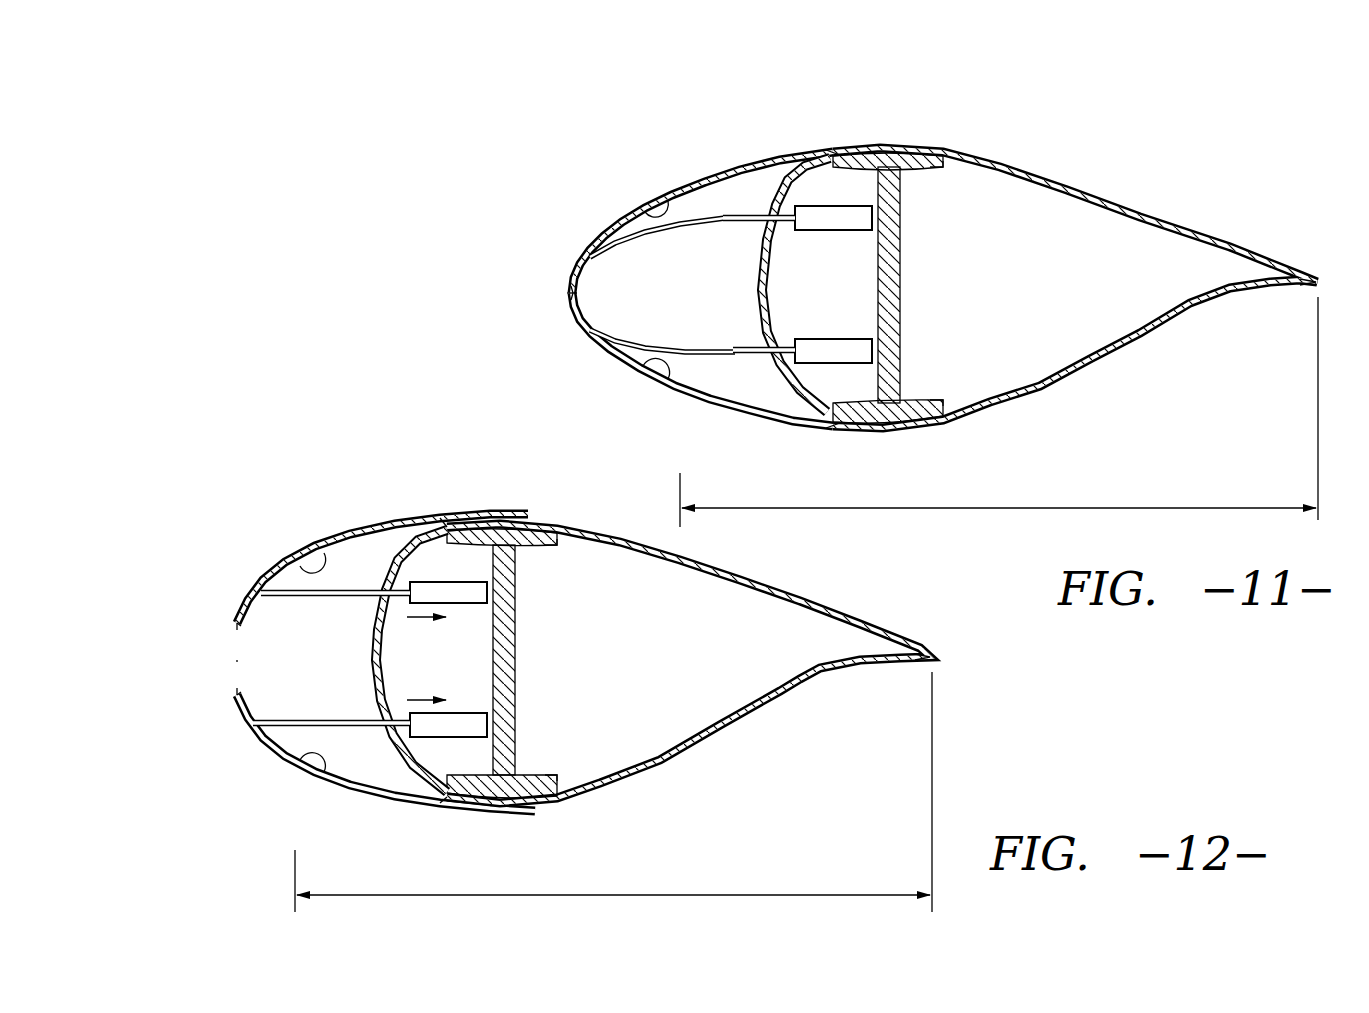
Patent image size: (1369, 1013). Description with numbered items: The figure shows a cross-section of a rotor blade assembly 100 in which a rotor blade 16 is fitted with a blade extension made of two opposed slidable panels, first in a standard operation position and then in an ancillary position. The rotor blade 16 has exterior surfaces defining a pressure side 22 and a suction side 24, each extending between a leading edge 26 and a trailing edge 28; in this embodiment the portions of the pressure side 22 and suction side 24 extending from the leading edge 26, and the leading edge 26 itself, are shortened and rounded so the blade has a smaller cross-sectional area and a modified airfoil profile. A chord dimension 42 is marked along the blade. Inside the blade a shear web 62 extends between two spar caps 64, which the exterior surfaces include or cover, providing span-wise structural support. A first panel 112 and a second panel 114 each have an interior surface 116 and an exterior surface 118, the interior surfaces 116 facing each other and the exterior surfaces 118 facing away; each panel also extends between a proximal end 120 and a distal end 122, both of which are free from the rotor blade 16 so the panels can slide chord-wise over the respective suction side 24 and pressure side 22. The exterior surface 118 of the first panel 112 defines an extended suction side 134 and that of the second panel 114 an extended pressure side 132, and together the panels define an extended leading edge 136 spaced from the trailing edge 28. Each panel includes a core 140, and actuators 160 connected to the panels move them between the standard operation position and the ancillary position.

In FIG. 11, the rotor blade 16 is at (1068, 164).
In FIG. 12, the rotor blade 16 is at (808, 592).
In FIG. 11, the pressure side 22 is at (906, 424).
In FIG. 12, the pressure side 22 is at (520, 800).
In FIG. 11, the suction side 24 is at (900, 152).
In FIG. 12, the suction side 24 is at (505, 527).
In FIG. 11, the leading edge 26 is at (765, 290).
In FIG. 12, the leading edge 26 is at (380, 660).
In FIG. 11, the trailing edge 28 is at (1320, 281).
In FIG. 12, the trailing edge 28 is at (935, 657).
In FIG. 11, the chord 42 is at (1080, 506).
In FIG. 12, the chord 42 is at (718, 893).
In FIG. 11, the shear web 62 is at (900, 300).
In FIG. 12, the shear web 62 is at (512, 672).
In FIG. 11, the spar caps 64 is at (922, 170).
In FIG. 12, the spar caps 64 is at (537, 547).
In FIG. 11, the rotor blade assembly 100 is at (557, 142).
In FIG. 12, the rotor blade assembly 100 is at (194, 480).
In FIG. 11, the first panel 112 is at (710, 160).
In FIG. 12, the first panel 112 is at (353, 520).
In FIG. 11, the second panel 114 is at (788, 434).
In FIG. 12, the second panel 114 is at (432, 820).
In FIG. 11, the interior surface 116 is at (648, 221).
In FIG. 12, the interior surface 116 is at (302, 560).
In FIG. 11, the exterior surface 118 is at (607, 238).
In FIG. 12, the exterior surface 118 is at (272, 546).
In FIG. 11, the proximal end 120 is at (808, 142).
In FIG. 12, the proximal end 120 is at (458, 508).
In FIG. 11, the distal end 122 is at (568, 270).
In FIG. 12, the distal end 122 is at (249, 546).
In FIG. 11, the extended pressure side 132 is at (690, 415).
In FIG. 12, the extended pressure side 132 is at (353, 798).
In FIG. 11, the extended suction side 134 is at (686, 172).
In FIG. 12, the extended suction side 134 is at (330, 527).
In FIG. 11, the extended leading edge 136 is at (557, 292).
In FIG. 12, the extended leading edge 136 is at (207, 679).
In FIG. 11, the core 140 is at (740, 178).
In FIG. 12, the core 140 is at (380, 525).
In FIG. 11, the actuator 160 is at (855, 232).
In FIG. 12, the actuator 160 is at (483, 604).